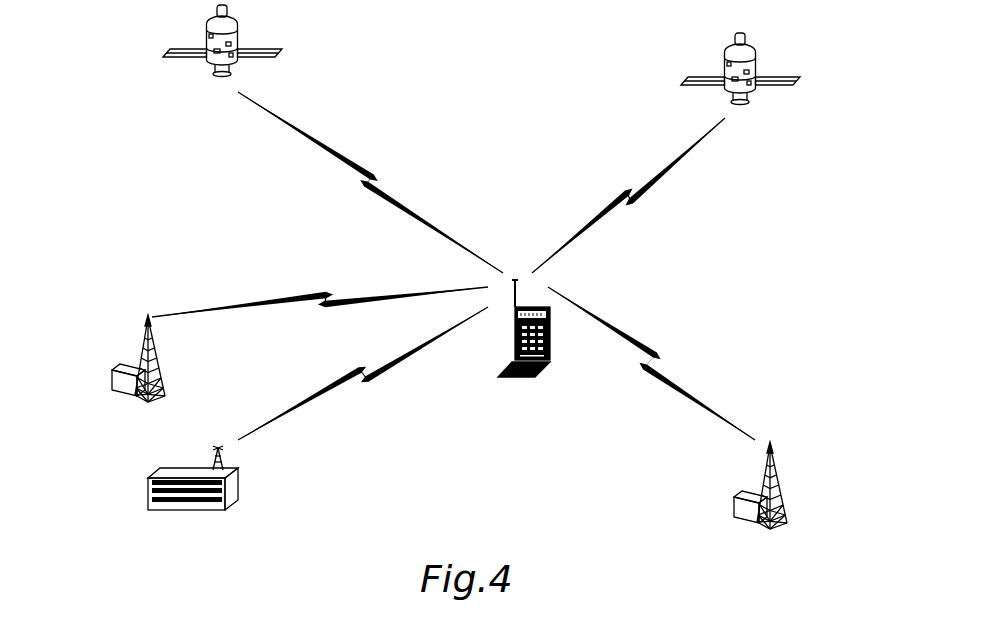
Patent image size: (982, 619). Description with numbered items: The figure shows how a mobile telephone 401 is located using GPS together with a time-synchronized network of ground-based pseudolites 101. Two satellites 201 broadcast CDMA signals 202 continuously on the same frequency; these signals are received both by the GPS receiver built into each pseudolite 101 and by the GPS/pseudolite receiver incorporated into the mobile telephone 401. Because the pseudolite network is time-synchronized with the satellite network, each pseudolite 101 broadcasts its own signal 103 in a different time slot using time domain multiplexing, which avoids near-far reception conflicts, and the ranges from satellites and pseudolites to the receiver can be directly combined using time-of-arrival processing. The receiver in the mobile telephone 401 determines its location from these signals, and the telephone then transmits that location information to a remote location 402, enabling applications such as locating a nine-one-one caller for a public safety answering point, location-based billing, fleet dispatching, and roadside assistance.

The pseudolite 101 is at (128, 360).
The TDMA radio link 103 is at (305, 283).
The satellite 201 is at (303, 45).
The CDMA signals 202 is at (377, 157).
The mobile telephone 401 is at (488, 385).
The remote location 402 is at (150, 462).